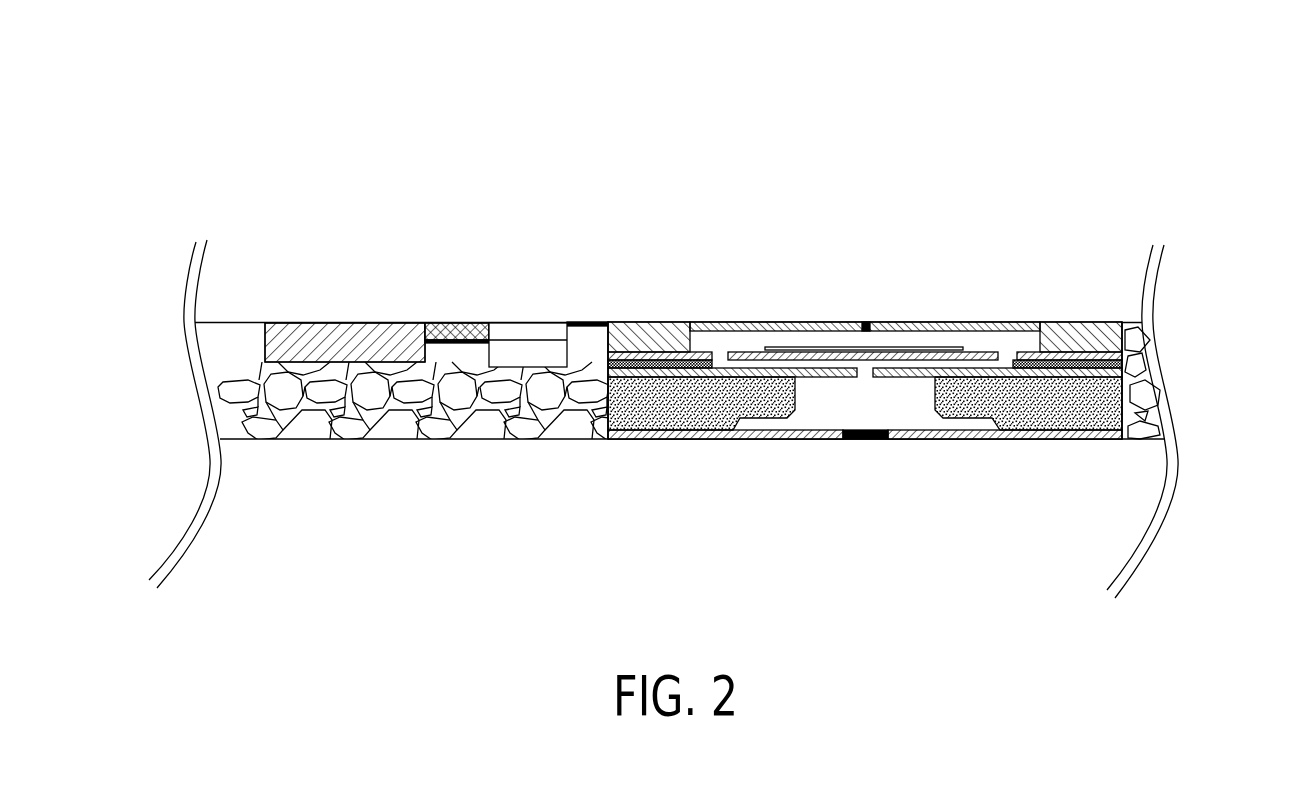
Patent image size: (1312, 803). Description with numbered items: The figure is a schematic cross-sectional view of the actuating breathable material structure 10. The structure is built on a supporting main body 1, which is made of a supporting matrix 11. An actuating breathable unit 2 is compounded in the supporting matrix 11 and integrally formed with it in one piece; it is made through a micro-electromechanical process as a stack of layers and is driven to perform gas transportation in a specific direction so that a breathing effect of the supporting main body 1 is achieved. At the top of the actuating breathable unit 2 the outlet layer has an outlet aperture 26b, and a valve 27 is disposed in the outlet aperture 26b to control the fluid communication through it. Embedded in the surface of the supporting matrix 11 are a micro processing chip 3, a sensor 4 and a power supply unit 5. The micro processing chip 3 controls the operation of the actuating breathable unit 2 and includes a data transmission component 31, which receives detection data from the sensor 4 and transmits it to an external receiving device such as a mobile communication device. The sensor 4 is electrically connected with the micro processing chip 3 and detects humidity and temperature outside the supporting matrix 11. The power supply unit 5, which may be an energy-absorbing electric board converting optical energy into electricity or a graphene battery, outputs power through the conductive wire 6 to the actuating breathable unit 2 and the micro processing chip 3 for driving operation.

The actuating breathable material structure 10 is at (1290, 82).
The supporting main body 1 is at (226, 322).
The supporting matrix 11 is at (215, 343).
The actuating breathable unit 2 is at (865, 340).
The valve 27 is at (865, 321).
The outlet aperture 26b is at (867, 321).
The micro processing chip 3 is at (516, 305).
The data transmission component 31 is at (537, 333).
The sensor 4 is at (457, 330).
The power supply unit 5 is at (340, 330).
The conductive wire 6 is at (446, 333).